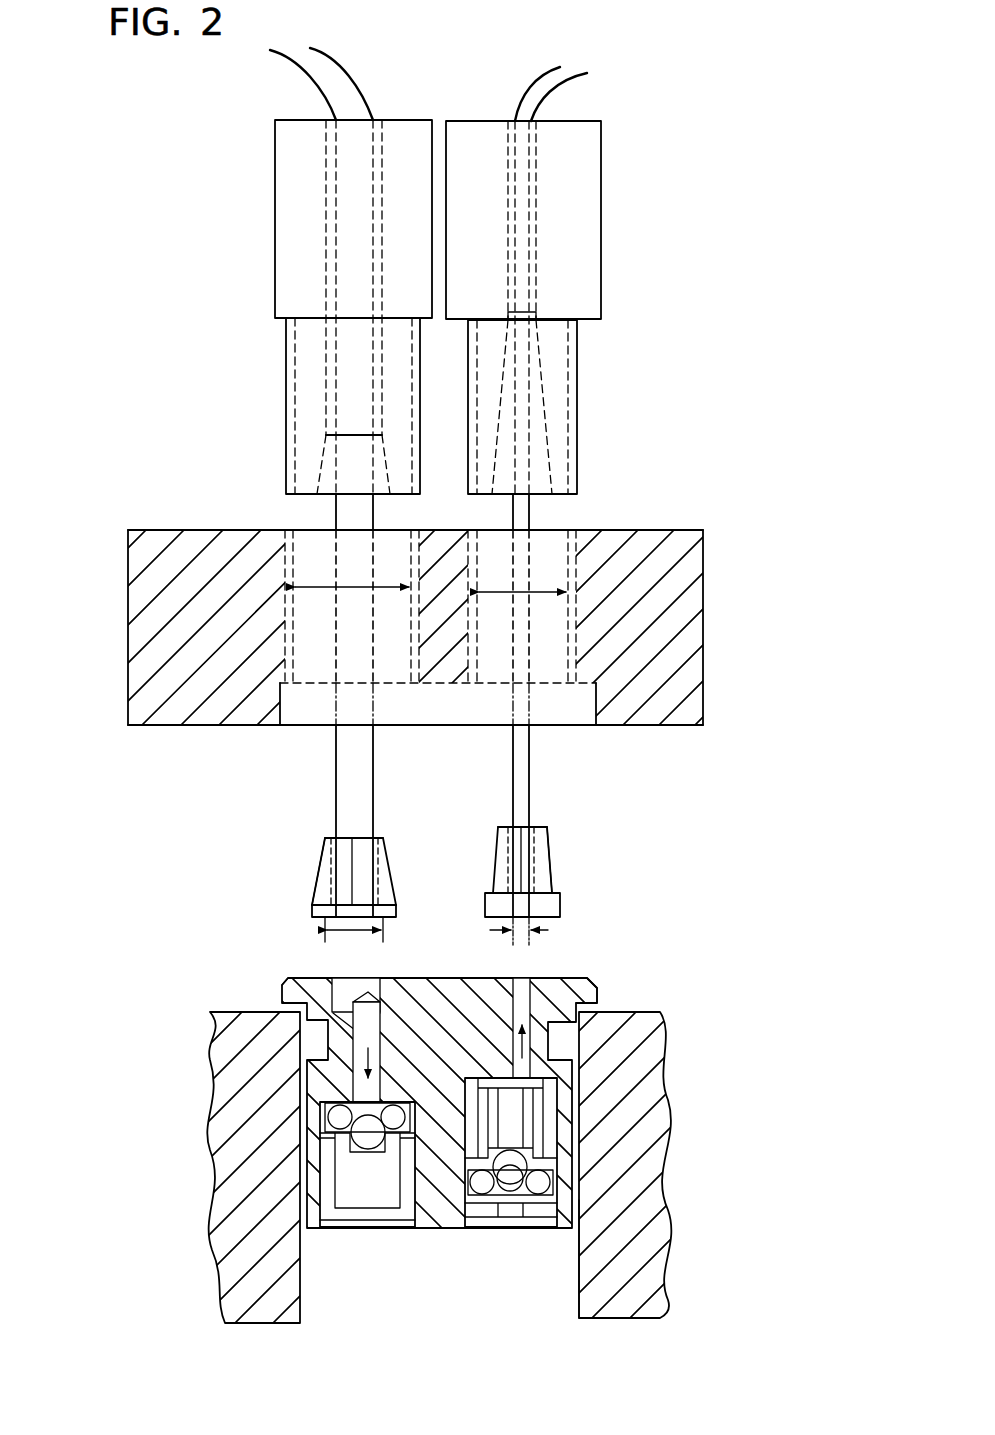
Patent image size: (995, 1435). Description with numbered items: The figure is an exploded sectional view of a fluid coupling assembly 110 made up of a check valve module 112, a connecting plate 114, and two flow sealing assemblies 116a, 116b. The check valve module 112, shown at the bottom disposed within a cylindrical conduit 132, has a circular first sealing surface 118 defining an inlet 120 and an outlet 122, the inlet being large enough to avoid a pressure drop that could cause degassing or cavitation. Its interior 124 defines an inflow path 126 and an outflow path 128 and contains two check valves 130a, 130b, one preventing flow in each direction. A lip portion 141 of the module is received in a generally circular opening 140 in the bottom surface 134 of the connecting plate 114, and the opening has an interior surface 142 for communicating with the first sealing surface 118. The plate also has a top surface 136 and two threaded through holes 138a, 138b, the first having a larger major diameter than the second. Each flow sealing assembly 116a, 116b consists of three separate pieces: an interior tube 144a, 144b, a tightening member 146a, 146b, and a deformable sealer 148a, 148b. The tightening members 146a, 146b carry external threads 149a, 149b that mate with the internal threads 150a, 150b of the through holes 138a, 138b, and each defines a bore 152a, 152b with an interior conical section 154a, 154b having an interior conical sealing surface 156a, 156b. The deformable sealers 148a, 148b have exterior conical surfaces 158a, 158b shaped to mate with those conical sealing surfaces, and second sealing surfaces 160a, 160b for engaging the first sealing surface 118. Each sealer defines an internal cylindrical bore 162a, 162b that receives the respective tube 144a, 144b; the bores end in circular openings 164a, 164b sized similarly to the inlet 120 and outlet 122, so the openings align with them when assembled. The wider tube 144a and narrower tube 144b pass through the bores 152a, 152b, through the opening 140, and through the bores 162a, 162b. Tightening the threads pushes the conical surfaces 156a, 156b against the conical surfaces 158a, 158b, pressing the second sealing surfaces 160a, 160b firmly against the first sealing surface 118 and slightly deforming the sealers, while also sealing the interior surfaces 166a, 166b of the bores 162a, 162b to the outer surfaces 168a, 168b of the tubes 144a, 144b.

The fluid coupling assembly 110 is at (138, 104).
The check valve module 112 is at (363, 1067).
The connecting plate 114 is at (150, 556).
The flow sealing assembly 116a is at (232, 247).
The flow sealing assembly 116b is at (628, 258).
The first sealing surface 118 is at (405, 978).
The inlet 120 is at (283, 980).
The outlet 122 is at (527, 977).
The interior 124 is at (438, 1190).
The inflow path 126 is at (222, 1105).
The outflow path 128 is at (575, 1050).
The check valve 130a is at (368, 1193).
The check valve 130b is at (510, 1140).
The cylindrical conduit 132 is at (650, 1235).
The bottom surface 134 is at (150, 730).
The top surface 136 is at (200, 528).
The threaded through hole 138a is at (313, 647).
The threaded through hole 138b is at (573, 578).
The opening 140 is at (565, 720).
The lip portion 141 is at (583, 988).
The interior surface 142 is at (285, 727).
The interior tube 144a is at (398, 80).
The interior tube 144b is at (517, 100).
The tightening member 146a is at (276, 147).
The tightening member 146b is at (603, 152).
The deformable sealer 148a is at (320, 888).
The deformable sealer 148b is at (549, 880).
The external threads 149a is at (295, 358).
The external threads 149b is at (567, 357).
The internal threads 150a is at (293, 600).
The internal threads 150b is at (573, 555).
The bore 152a is at (328, 203).
The bore 152b is at (536, 203).
The interior conical section 154a is at (327, 458).
The interior conical section 154b is at (540, 437).
The interior conical sealing surface 156a is at (320, 488).
The interior conical sealing surface 156b is at (540, 492).
The exterior conical surface 158a is at (320, 882).
The exterior conical surface 158b is at (550, 862).
The second sealing surface 160a is at (312, 918).
The second sealing surface 160b is at (553, 916).
The internal cylindrical bore 162a is at (377, 860).
The internal cylindrical bore 162b is at (512, 845).
The circular opening 164a is at (360, 903).
The circular opening 164b is at (515, 915).
The interior surface 166a is at (315, 912).
The interior surface 166b is at (555, 903).
The outer surface 168a is at (330, 835).
The outer surface 168b is at (542, 828).